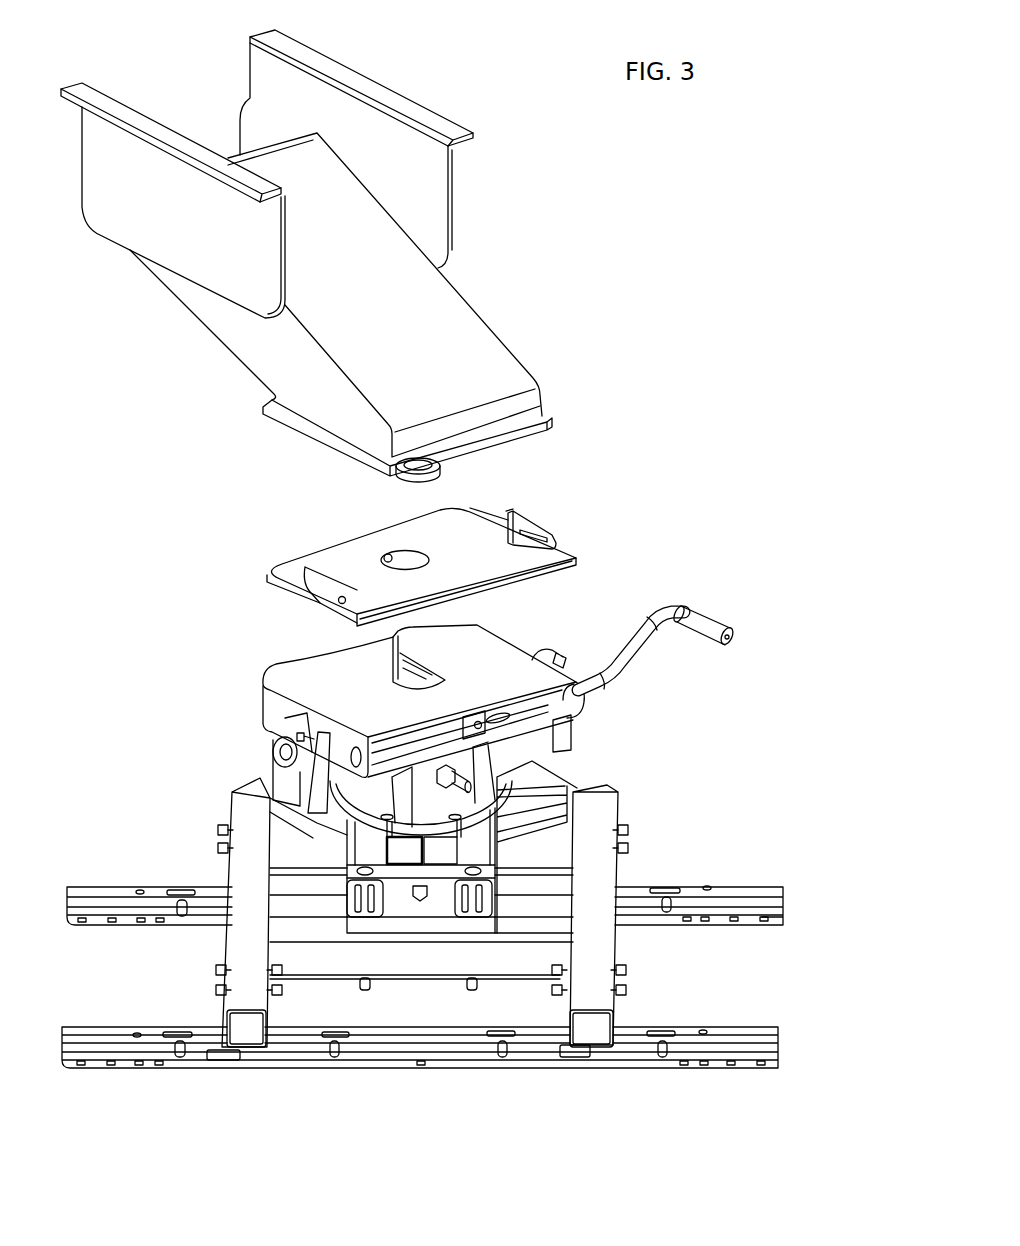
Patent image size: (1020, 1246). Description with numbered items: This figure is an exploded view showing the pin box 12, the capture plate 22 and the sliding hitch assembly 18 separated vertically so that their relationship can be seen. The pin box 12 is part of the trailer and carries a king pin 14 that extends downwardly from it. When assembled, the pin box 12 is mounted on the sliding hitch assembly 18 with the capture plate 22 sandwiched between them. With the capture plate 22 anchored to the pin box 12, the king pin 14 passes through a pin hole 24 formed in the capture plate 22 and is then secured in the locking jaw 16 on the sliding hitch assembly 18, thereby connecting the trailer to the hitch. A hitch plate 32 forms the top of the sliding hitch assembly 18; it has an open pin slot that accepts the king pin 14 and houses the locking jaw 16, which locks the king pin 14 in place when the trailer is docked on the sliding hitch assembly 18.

The pin box 12 is at (467, 366).
The king pin 14 is at (487, 464).
The locking jaw 16 is at (469, 659).
The sliding hitch assembly 18 is at (144, 791).
The capture plate 22 is at (337, 534).
The pin hole 24 is at (370, 535).
The hitch plate 32 is at (490, 650).